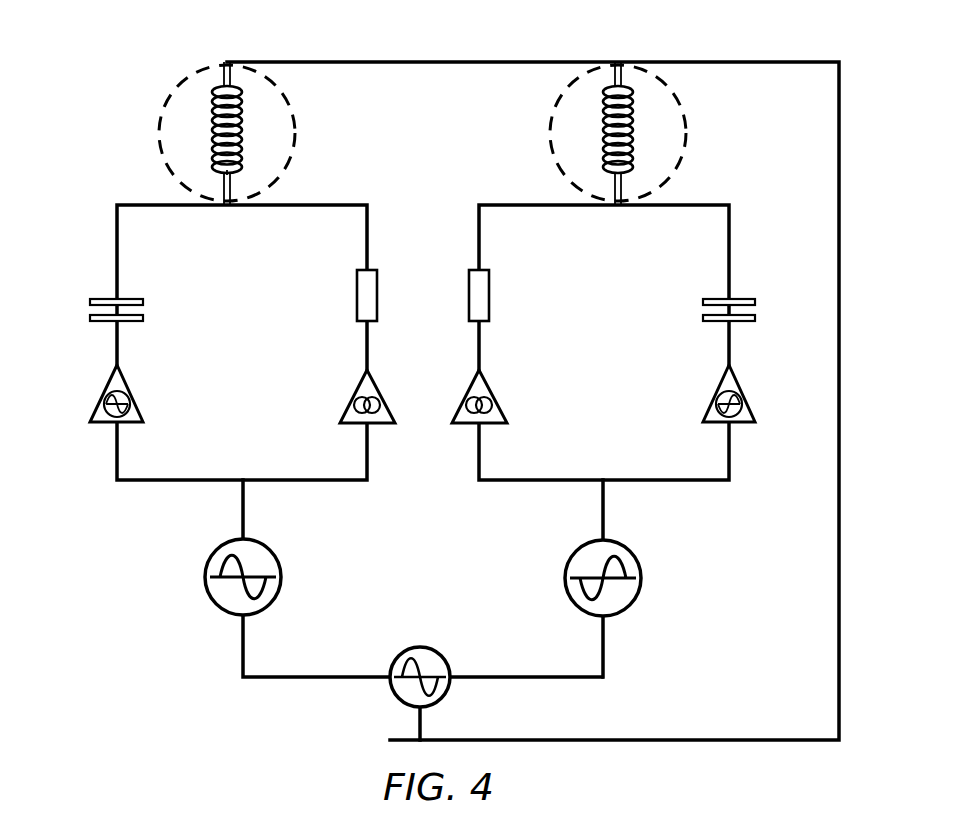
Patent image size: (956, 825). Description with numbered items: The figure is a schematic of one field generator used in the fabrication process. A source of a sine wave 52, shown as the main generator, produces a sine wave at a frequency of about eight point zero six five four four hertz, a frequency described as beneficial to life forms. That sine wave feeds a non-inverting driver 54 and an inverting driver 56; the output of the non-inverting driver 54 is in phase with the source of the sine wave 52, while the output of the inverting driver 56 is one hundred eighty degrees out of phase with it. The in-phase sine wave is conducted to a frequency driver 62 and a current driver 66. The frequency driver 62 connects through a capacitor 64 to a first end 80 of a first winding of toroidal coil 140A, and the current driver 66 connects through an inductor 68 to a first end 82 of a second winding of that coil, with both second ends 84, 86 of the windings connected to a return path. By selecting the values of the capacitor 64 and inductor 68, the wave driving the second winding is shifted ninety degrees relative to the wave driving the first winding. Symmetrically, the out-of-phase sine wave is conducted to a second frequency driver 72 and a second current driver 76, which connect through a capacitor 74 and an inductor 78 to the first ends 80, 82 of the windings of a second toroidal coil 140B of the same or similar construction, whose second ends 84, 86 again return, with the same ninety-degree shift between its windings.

The toroidal coil A 140A is at (226, 48).
The second toroidal coil 140B is at (616, 40).
The second end of first winding 84 is at (220, 78).
The second end of second winding 86 is at (240, 76).
The first end of first winding 80 is at (222, 180).
The first end of second winding 82 is at (232, 178).
The capacitor 64 is at (102, 322).
The frequency driver 62 is at (130, 392).
The inductor 68 is at (357, 290).
The current driver 66 is at (358, 392).
The inductor 78 is at (489, 290).
The second current driver 76 is at (488, 392).
The capacitor 74 is at (744, 322).
The second frequency driver 72 is at (718, 392).
The non-inverting driver 54 is at (274, 552).
The inverting driver 56 is at (572, 552).
The source of a sine wave 52 is at (394, 698).